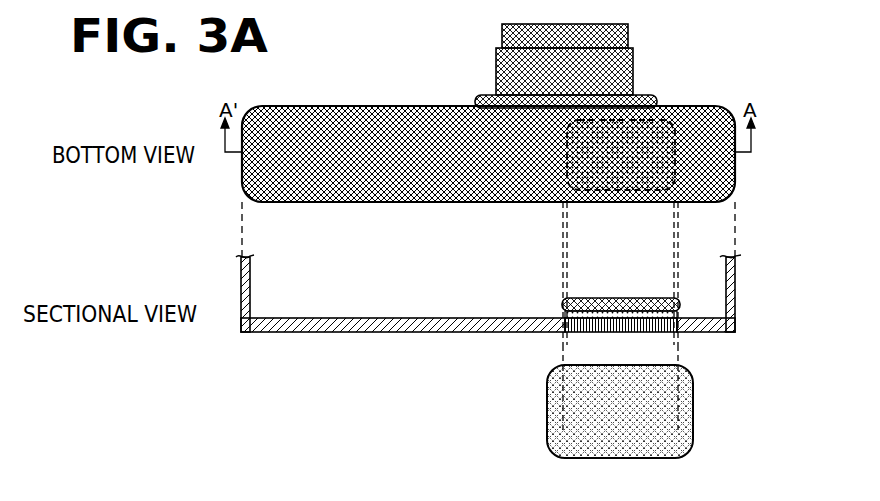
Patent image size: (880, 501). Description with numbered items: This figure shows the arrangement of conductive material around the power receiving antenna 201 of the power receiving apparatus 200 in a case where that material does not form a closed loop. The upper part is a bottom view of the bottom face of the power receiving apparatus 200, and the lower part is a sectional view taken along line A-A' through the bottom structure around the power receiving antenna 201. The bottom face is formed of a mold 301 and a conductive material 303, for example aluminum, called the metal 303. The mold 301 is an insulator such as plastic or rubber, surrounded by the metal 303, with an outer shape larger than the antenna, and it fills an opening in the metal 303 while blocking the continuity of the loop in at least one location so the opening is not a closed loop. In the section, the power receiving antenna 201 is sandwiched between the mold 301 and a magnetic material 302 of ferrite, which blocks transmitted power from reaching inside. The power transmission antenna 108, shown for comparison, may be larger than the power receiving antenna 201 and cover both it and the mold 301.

The power receiving apparatus 200 is at (512, 195).
The power receiving antenna 201 is at (656, 132).
The mold 301 is at (602, 201).
The magnetic material 302 is at (637, 298).
The conductive material (metal) 303 is at (370, 201).
The power transmission antenna 108 is at (556, 438).